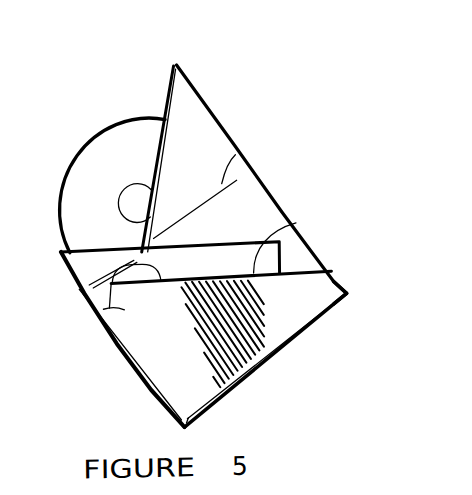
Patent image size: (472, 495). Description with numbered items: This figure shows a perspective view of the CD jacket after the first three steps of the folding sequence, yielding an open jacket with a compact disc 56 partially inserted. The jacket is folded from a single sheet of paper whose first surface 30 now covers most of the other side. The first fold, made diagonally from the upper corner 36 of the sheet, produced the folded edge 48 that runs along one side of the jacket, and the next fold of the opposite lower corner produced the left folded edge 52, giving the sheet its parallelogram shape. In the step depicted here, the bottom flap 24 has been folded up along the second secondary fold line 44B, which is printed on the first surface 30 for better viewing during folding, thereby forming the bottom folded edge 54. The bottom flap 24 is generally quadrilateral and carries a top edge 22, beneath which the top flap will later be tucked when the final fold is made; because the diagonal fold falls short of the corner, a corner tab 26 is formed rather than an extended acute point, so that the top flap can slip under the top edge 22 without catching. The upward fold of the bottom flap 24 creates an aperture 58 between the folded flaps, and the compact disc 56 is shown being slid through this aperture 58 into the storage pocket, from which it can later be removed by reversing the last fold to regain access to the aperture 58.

The top edge 22 is at (293, 223).
The bottom flap 24 is at (322, 295).
The corner tab 26 is at (99, 302).
The first surface 30 is at (193, 129).
The upper corner 36 is at (176, 64).
The second secondary fold line 44B is at (233, 155).
The folded edge 48 is at (263, 189).
The left folded edge 52 is at (60, 269).
The bottom folded edge 54 is at (279, 350).
The compact disc 56 is at (102, 147).
The aperture 58 is at (160, 110).